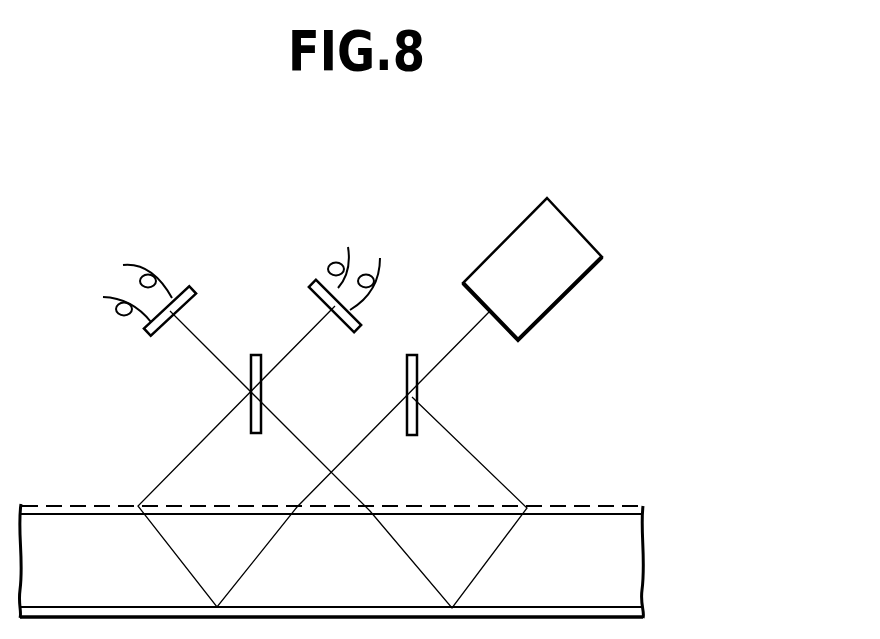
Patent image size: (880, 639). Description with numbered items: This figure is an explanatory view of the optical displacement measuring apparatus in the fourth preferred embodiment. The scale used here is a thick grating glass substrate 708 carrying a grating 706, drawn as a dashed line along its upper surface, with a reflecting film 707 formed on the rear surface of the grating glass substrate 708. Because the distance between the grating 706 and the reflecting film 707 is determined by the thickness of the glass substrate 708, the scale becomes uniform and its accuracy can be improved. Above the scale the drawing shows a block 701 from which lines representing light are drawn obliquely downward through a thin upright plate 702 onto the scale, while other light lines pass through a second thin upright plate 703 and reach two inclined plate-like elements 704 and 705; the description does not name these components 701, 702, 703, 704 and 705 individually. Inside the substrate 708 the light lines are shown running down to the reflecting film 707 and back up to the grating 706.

The laser light source 701 is at (578, 233).
The beam splitter 702 is at (418, 397).
The beam splitter 703 is at (250, 392).
The mirror 704 is at (140, 340).
The mirror 705 is at (313, 283).
The grating 706 is at (590, 507).
The reflecting film 707 is at (633, 615).
The grating glass substrate 708 is at (627, 552).